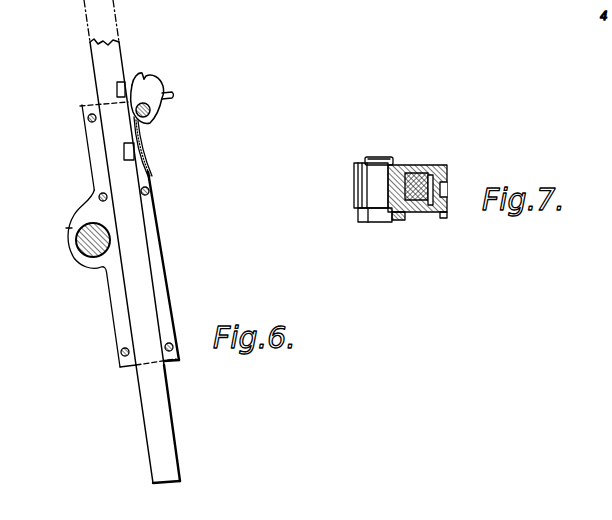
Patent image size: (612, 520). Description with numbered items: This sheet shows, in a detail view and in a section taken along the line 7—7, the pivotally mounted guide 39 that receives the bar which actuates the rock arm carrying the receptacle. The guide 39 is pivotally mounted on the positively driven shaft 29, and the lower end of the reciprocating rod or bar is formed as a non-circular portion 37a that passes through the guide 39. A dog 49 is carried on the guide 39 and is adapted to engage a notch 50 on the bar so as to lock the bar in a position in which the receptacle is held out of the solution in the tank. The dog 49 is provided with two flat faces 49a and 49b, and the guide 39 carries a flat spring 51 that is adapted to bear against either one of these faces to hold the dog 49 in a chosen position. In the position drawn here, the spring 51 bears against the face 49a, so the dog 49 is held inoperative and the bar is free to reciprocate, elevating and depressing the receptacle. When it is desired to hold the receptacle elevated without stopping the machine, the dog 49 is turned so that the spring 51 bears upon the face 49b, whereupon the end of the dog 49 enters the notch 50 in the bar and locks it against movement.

In FIG. 6, the section line 7 is at (112, 157).
In FIG. 6, the positively driven shaft 29 is at (92, 268).
In FIG. 7, the positively driven shaft 29 is at (388, 158).
In FIG. 6, the non-circular portion 37a is at (165, 401).
In FIG. 7, the non-circular portion 37a is at (412, 180).
In FIG. 6, the guide 39 is at (152, 243).
In FIG. 7, the guide 39 is at (387, 193).
In FIG. 6, the dog 49 is at (156, 88).
In FIG. 6, the flat face 49a is at (156, 117).
In FIG. 6, the flat face 49b is at (133, 82).
In FIG. 6, the notch 50 is at (124, 160).
In FIG. 7, the notch 50 is at (428, 206).
In FIG. 6, the flat spring 51 is at (153, 138).
In FIG. 7, the flat spring 51 is at (447, 193).